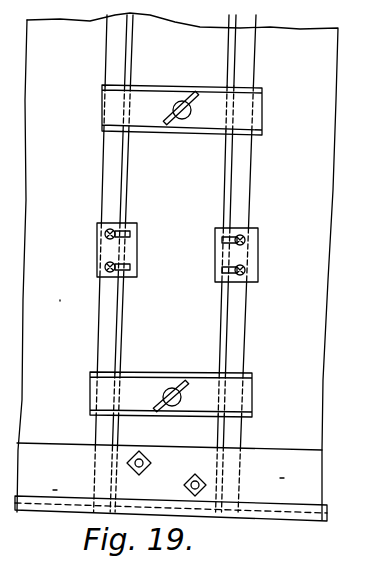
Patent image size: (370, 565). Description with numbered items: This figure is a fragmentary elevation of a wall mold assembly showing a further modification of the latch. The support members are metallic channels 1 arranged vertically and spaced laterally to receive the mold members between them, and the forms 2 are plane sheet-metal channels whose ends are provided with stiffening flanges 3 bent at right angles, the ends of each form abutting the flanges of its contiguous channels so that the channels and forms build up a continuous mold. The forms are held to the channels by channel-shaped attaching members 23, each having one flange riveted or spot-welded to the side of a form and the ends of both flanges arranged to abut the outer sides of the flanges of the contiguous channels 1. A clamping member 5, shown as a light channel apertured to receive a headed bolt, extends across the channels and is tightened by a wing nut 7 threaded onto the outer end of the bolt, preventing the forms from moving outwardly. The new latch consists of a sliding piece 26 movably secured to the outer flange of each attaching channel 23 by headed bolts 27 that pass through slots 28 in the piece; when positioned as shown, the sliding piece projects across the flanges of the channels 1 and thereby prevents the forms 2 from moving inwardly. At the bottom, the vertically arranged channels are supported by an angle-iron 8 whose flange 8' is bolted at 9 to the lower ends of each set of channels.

The channel 1 is at (167, 325).
The form 2 is at (268, 415).
The flange 3 is at (305, 508).
The clamping member 5 is at (198, 392).
The wing nut 7 is at (176, 388).
The angle-iron 8 is at (297, 519).
The flange 8' is at (48, 520).
The bolt 9 is at (152, 463).
The channel-shaped attaching member 23 is at (112, 193).
The sliding piece 26 is at (98, 245).
The headed bolt 27 is at (107, 267).
The slot 28 is at (117, 276).